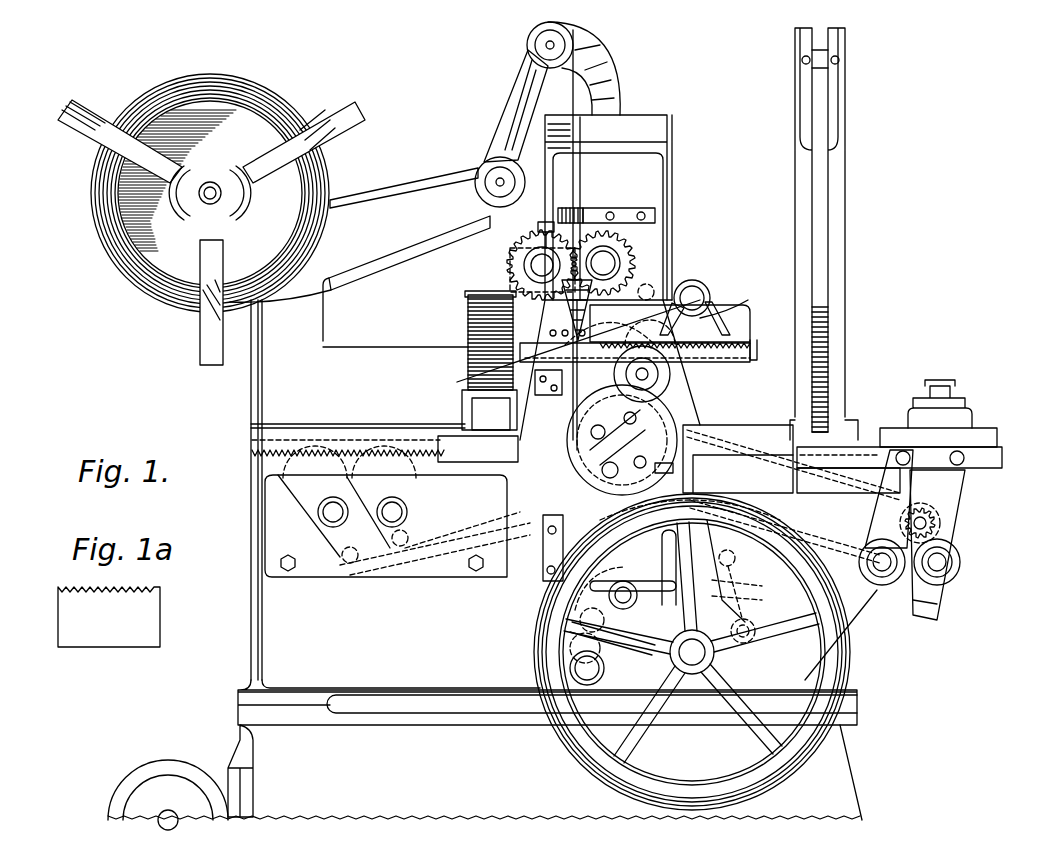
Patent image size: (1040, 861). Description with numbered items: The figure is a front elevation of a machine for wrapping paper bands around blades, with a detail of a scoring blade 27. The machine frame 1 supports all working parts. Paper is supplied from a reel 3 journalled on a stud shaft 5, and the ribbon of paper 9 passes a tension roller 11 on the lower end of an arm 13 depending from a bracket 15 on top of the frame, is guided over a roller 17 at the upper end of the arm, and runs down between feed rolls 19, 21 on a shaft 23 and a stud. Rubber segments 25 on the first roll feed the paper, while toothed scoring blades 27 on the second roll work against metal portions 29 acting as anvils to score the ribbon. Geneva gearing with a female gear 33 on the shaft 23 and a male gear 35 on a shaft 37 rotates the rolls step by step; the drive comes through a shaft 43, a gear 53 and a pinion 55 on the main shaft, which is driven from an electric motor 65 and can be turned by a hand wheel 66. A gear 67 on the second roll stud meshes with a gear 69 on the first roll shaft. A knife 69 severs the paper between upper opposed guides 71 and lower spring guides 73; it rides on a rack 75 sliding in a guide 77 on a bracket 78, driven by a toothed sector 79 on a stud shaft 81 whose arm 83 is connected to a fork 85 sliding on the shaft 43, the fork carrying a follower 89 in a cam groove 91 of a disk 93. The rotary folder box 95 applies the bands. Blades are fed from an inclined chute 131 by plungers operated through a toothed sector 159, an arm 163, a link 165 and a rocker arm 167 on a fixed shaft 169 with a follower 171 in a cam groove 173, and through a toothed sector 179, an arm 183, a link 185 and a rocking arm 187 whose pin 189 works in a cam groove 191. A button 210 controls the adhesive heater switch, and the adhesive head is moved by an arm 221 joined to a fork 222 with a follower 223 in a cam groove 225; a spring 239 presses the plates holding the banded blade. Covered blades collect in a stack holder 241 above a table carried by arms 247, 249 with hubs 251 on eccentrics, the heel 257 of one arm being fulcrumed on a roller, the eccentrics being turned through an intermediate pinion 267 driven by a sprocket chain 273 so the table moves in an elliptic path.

In FIG. 1, the machine frame 1 is at (275, 624).
In FIG. 1, the reel 3 is at (150, 258).
In FIG. 1, the stud shaft 5 is at (198, 193).
In FIG. 1, the ribbon of paper 9 is at (455, 208).
In FIG. 1, the roller 11 is at (478, 165).
In FIG. 1, the arm 13 is at (500, 128).
In FIG. 1, the bracket 15 is at (616, 70).
In FIG. 1, the roller 17 is at (525, 44).
In FIG. 1, the feed roll 19 is at (530, 262).
In FIG. 1, the feed roll 21 is at (622, 252).
In FIG. 1, the shaft 23 is at (615, 260).
In FIG. 1, the segments 25 is at (520, 240).
In FIG. 1, the toothed scoring blades 27 is at (652, 284).
In FIG. 1A, the toothed scoring blades 27 is at (160, 606).
In FIG. 1, the metal portions 29 is at (550, 222).
In FIG. 1, the female gear 33 is at (510, 268).
In FIG. 1, the male gear 35 is at (468, 322).
In FIG. 1, the shaft 37 is at (468, 360).
In FIG. 1, the shaft 43 is at (676, 412).
In FIG. 1, the gear 53 is at (738, 560).
In FIG. 1, the pinion 55 is at (668, 662).
In FIG. 1, the electric motor 65 is at (138, 778).
In FIG. 1, the hand wheel 66 is at (848, 654).
In FIG. 1, the gear 67 is at (603, 235).
In FIG. 1, the gear 69 is at (575, 222).
In FIG. 1, the upper opposed guides 71 is at (570, 320).
In FIG. 1, the lower spring guides 73 is at (568, 398).
In FIG. 1, the rack 75 is at (757, 353).
In FIG. 1, the guide 77 is at (740, 362).
In FIG. 1, the bracket 78 is at (740, 300).
In FIG. 1, the toothed sector 79 is at (735, 322).
In FIG. 1, the stud shaft 81 is at (696, 300).
In FIG. 1, the arm 83 is at (672, 276).
In FIG. 1, the fork 85 is at (720, 306).
In FIG. 1, the follower 89 is at (670, 332).
In FIG. 1, the cam groove 91 is at (670, 384).
In FIG. 1, the disk 93 is at (670, 372).
In FIG. 1, the box 95 is at (673, 470).
In FIG. 1, the chute 131 is at (465, 300).
In FIG. 1, the toothed sector 159 is at (310, 505).
In FIG. 1, the arm 163 is at (340, 548).
In FIG. 1, the link 165 is at (406, 568).
In FIG. 1, the rocker arm 167 is at (570, 642).
In FIG. 1, the shaft 169 is at (572, 668).
In FIG. 1, the follower 171 is at (580, 618).
In FIG. 1, the cam groove 173 is at (600, 596).
In FIG. 1, the toothed sector 179 is at (402, 500).
In FIG. 1, the arm 183 is at (412, 528).
In FIG. 1, the link 185 is at (478, 518).
In FIG. 1, the rocking arm 187 is at (548, 534).
In FIG. 1, the pin 189 is at (547, 574).
In FIG. 1, the cam groove 191 is at (543, 566).
In FIG. 1, the button 210 is at (952, 386).
In FIG. 1, the arm 221 is at (752, 588).
In FIG. 1, the fork 222 is at (752, 601).
In FIG. 1, the follower 223 is at (700, 498).
In FIG. 1, the cam groove 225 is at (748, 643).
In FIG. 1, the spring 239 is at (778, 420).
In FIG. 1, the stack holder 241 is at (846, 352).
In FIG. 1, the arm 247 is at (885, 505).
In FIG. 1, the arm 249 is at (962, 512).
In FIG. 1, the hubs 251 is at (860, 556).
In FIG. 1, the heel 257 is at (940, 606).
In FIG. 1, the intermediate pinion 267 is at (935, 512).
In FIG. 1, the sprocket chain 273 is at (808, 530).